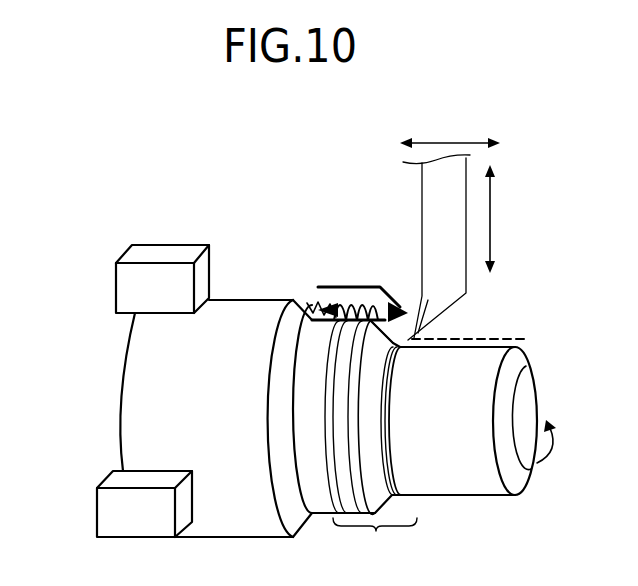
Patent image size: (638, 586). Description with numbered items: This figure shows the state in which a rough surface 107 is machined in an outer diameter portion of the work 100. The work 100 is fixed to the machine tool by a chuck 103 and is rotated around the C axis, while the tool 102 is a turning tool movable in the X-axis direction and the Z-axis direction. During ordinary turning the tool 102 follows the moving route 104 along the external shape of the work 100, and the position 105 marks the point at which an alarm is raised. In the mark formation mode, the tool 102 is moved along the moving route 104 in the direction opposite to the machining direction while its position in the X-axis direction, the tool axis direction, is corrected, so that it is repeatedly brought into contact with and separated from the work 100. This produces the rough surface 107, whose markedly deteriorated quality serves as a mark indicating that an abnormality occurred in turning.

The work 100 is at (120, 400).
The tool 102 is at (422, 189).
The chuck 103 is at (116, 283).
The moving route 104 is at (352, 290).
The position 105 is at (308, 306).
The rough surface 107 is at (375, 542).